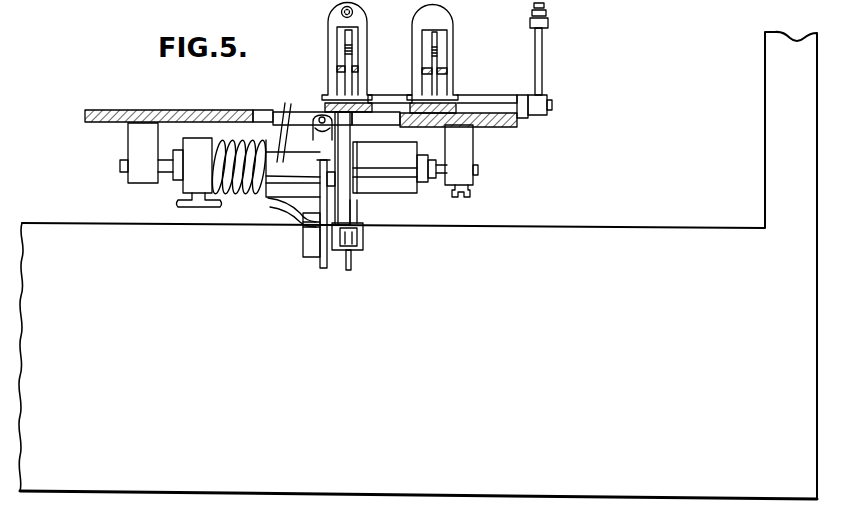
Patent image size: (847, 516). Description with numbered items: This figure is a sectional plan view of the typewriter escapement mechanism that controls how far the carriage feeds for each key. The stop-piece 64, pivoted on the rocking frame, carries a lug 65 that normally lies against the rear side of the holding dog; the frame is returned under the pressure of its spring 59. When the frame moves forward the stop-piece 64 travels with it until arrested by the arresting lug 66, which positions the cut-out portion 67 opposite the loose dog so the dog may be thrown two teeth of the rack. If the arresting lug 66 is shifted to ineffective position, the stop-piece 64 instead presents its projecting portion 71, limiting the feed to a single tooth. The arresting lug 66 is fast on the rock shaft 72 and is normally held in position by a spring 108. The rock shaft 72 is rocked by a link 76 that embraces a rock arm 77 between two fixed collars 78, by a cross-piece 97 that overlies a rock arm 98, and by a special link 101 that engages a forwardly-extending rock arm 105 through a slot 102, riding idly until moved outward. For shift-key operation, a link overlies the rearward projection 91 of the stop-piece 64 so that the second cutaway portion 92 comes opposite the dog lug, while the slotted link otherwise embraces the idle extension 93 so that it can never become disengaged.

The spring 59 is at (262, 196).
The stop-piece 64 is at (352, 210).
The lug 65 is at (306, 228).
The arresting lug 66 is at (333, 137).
The cut-out portion 67 is at (333, 178).
The projecting portion 71 is at (345, 168).
The rock shaft 72 is at (552, 105).
The link 76 is at (531, 13).
The rock arm 77 is at (543, 60).
The fixed collars 78 is at (545, 8).
The rearward projection 91 is at (357, 244).
The second cutaway portion 92 is at (340, 147).
The idle extension 93 is at (344, 273).
The cross-piece 97 is at (338, 69).
The rock arm 98 is at (344, 47).
The special link 101 is at (446, 74).
The slot 102 is at (440, 72).
The rock arm 105 is at (430, 47).
The spring 108 is at (330, 14).